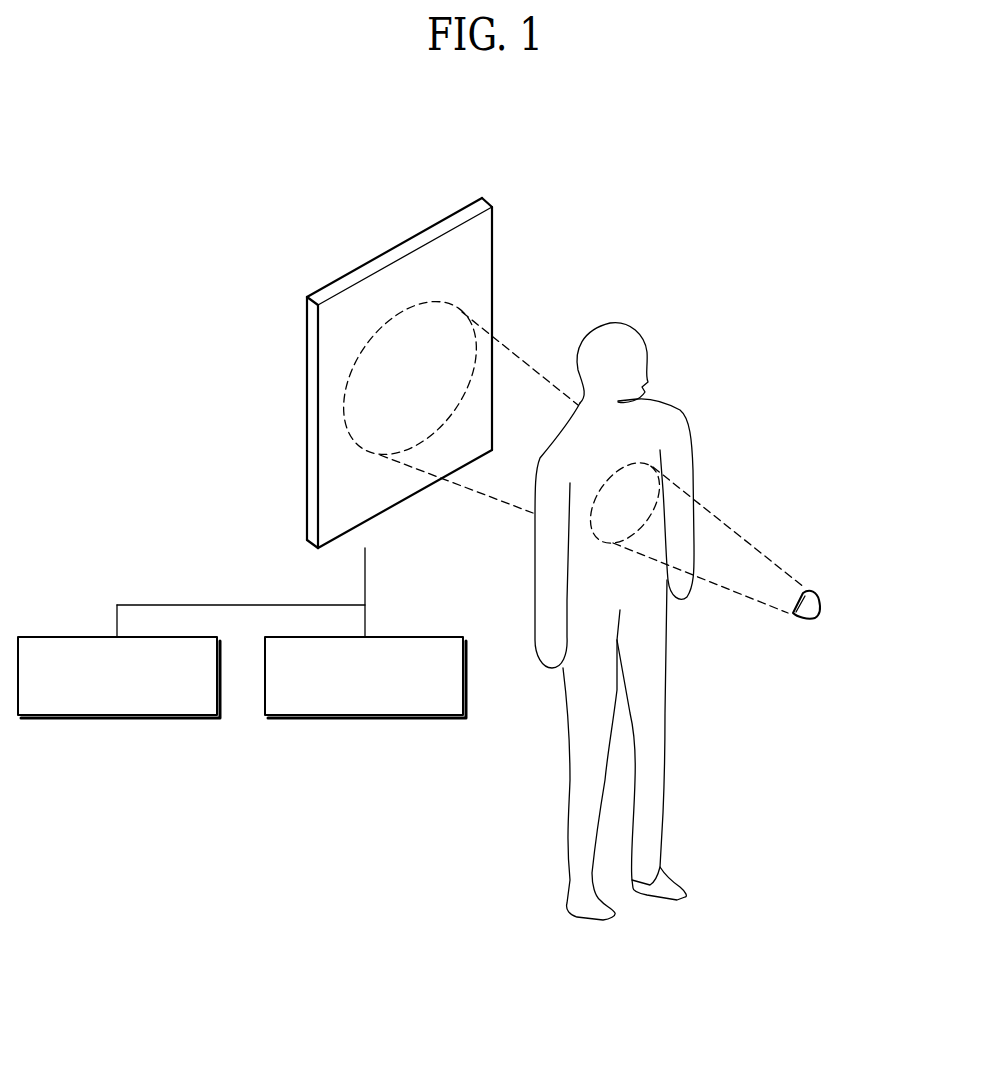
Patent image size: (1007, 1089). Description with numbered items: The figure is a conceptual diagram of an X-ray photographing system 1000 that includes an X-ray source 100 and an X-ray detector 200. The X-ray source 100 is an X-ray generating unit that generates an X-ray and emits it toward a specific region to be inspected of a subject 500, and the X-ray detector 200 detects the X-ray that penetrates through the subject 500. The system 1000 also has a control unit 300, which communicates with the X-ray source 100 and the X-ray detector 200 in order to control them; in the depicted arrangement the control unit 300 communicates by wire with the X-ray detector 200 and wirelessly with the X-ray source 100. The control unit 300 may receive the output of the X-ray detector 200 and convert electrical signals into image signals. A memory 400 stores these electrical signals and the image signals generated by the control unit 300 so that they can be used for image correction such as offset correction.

The X-ray photographing system 1000 is at (631, 120).
The X-ray source 100 is at (820, 603).
The X-ray detector 200 is at (485, 243).
The control unit 300 is at (410, 634).
The memory 400 is at (73, 634).
The subject 500 is at (677, 417).